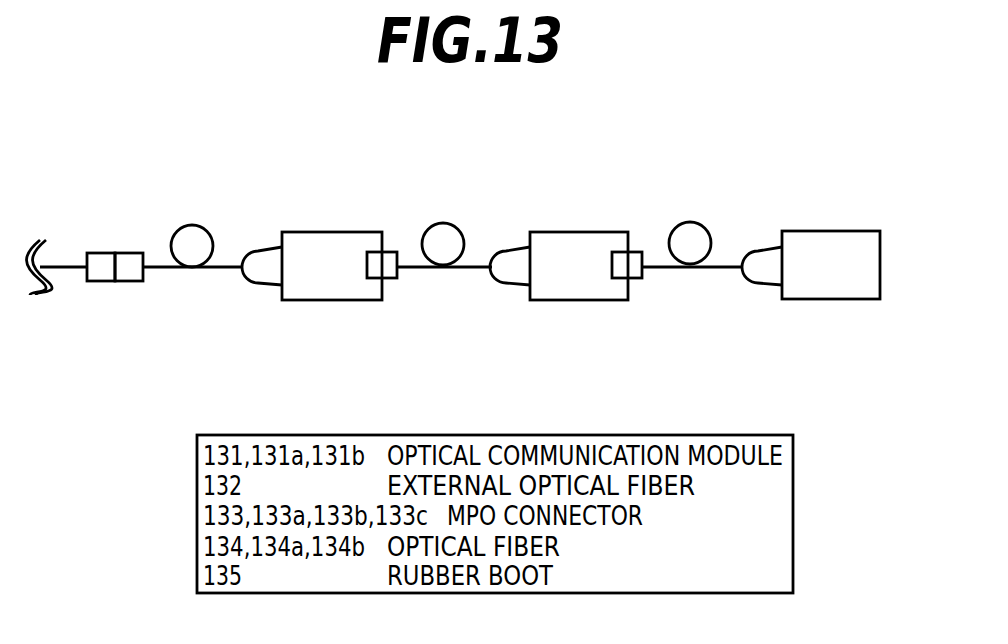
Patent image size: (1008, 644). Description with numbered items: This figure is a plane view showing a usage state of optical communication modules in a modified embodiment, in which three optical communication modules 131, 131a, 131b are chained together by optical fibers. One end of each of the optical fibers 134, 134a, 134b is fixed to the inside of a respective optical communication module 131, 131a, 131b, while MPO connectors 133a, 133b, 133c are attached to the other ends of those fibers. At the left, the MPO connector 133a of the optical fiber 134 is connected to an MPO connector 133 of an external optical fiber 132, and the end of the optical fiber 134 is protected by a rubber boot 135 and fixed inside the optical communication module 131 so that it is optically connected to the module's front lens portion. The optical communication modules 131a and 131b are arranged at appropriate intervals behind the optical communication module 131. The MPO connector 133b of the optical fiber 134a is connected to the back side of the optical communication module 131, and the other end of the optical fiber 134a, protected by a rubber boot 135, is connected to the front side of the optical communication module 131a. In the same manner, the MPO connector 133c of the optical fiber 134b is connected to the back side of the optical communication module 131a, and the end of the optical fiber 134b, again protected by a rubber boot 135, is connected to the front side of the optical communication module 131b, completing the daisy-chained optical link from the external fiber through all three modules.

The optical communication module 131 is at (318, 232).
The optical communication module 131a is at (580, 232).
The optical communication module 131b is at (832, 231).
The external optical fiber 132 is at (63, 267).
The MPO connector 133 is at (94, 281).
The MPO connector 133a is at (128, 281).
The MPO connector 133b is at (390, 278).
The MPO connector 133c is at (636, 278).
The optical fiber 134 is at (197, 225).
The optical fiber 134a is at (447, 224).
The optical fiber 134b is at (698, 223).
The rubber boot 135 is at (258, 285).